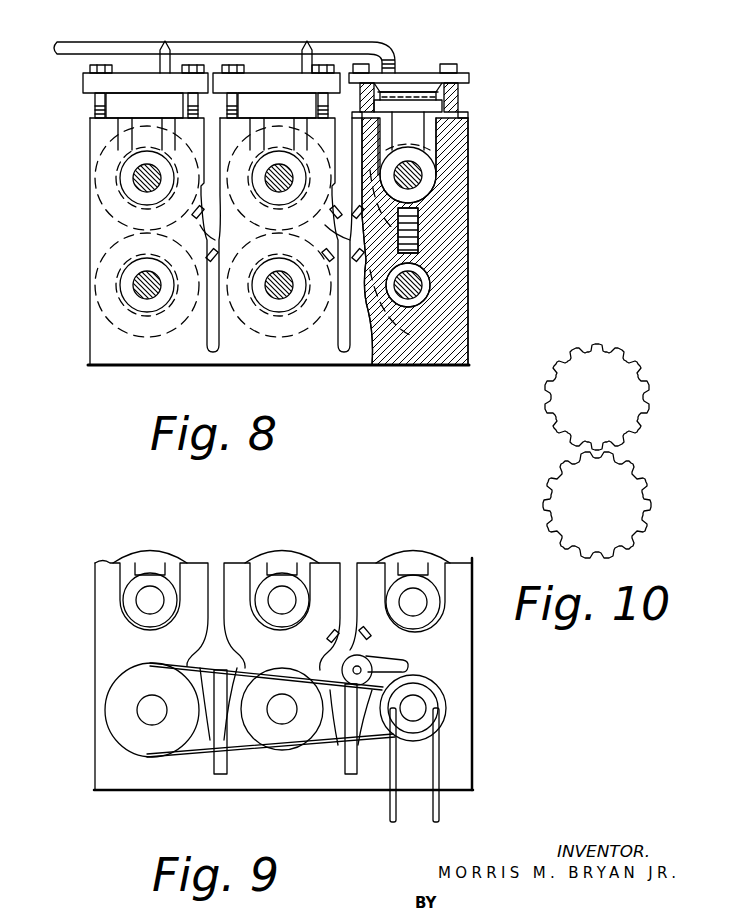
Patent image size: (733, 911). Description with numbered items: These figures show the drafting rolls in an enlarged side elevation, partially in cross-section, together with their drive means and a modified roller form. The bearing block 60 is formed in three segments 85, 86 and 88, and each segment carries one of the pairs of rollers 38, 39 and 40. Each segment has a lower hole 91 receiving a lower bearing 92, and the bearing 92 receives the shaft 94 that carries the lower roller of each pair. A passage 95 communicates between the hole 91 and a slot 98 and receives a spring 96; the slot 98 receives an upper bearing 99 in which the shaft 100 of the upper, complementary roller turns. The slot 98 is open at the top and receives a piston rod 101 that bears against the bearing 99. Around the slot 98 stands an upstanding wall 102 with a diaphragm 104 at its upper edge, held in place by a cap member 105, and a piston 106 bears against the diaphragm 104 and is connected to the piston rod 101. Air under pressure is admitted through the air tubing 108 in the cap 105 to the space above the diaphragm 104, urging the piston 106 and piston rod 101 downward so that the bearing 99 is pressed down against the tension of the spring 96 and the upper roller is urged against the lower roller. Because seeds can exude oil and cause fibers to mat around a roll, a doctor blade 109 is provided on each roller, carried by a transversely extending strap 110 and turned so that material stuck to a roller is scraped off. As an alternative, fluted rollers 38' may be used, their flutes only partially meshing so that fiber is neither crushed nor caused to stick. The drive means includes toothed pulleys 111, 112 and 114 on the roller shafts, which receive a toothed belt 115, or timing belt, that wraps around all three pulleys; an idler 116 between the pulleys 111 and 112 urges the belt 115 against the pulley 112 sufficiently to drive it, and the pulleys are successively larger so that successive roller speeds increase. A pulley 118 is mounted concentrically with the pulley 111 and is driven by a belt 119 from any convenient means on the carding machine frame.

In FIG. 8, the pair of rollers 38 is at (130, 208).
In FIG. 9, the pair of rollers 38 is at (151, 596).
In FIG. 10, the fluted rollers 38' is at (582, 451).
In FIG. 9, the pair of rollers 39 is at (283, 560).
In FIG. 8, the pair of rollers 40 is at (466, 216).
In FIG. 9, the pair of rollers 40 is at (422, 560).
In FIG. 8, the bearing block 60 is at (466, 191).
In FIG. 8, the segment 85 is at (88, 207).
In FIG. 9, the segment 85 is at (95, 628).
In FIG. 8, the segment 86 is at (290, 368).
In FIG. 9, the segment 86 is at (270, 790).
In FIG. 8, the segment 88 is at (468, 238).
In FIG. 9, the segment 88 is at (472, 738).
In FIG. 8, the lower hole 91 is at (122, 296).
In FIG. 8, the lower bearing 92 is at (165, 303).
In FIG. 8, the shaft 94 is at (152, 266).
In FIG. 8, the passage 95 is at (418, 249).
In FIG. 8, the spring 96 is at (418, 215).
In FIG. 8, the slot 98 is at (455, 152).
In FIG. 8, the upper bearing 99 is at (440, 168).
In FIG. 9, the upper bearing 99 is at (172, 616).
In FIG. 8, the shaft 100 is at (277, 224).
In FIG. 9, the shaft 100 is at (160, 593).
In FIG. 8, the piston rod 101 is at (152, 103).
In FIG. 9, the piston rod 101 is at (155, 566).
In FIG. 8, the upstanding wall 102 is at (458, 93).
In FIG. 8, the diaphragm 104 is at (425, 85).
In FIG. 8, the cap member 105 is at (466, 78).
In FIG. 8, the piston 106 is at (392, 100).
In FIG. 8, the air tubing 108 is at (323, 52).
In FIG. 8, the doctor blade 109 is at (267, 228).
In FIG. 9, the doctor blade 109 is at (344, 629).
In FIG. 8, the strap 110 is at (212, 246).
In FIG. 9, the strap 110 is at (356, 640).
In FIG. 9, the pulley 111 is at (434, 690).
In FIG. 9, the pulley 112 is at (292, 681).
In FIG. 9, the pulley 114 is at (122, 681).
In FIG. 9, the toothed belt 115 is at (240, 755).
In FIG. 9, the idler 116 is at (372, 660).
In FIG. 9, the pulley 118 is at (430, 692).
In FIG. 9, the belt 119 is at (440, 806).